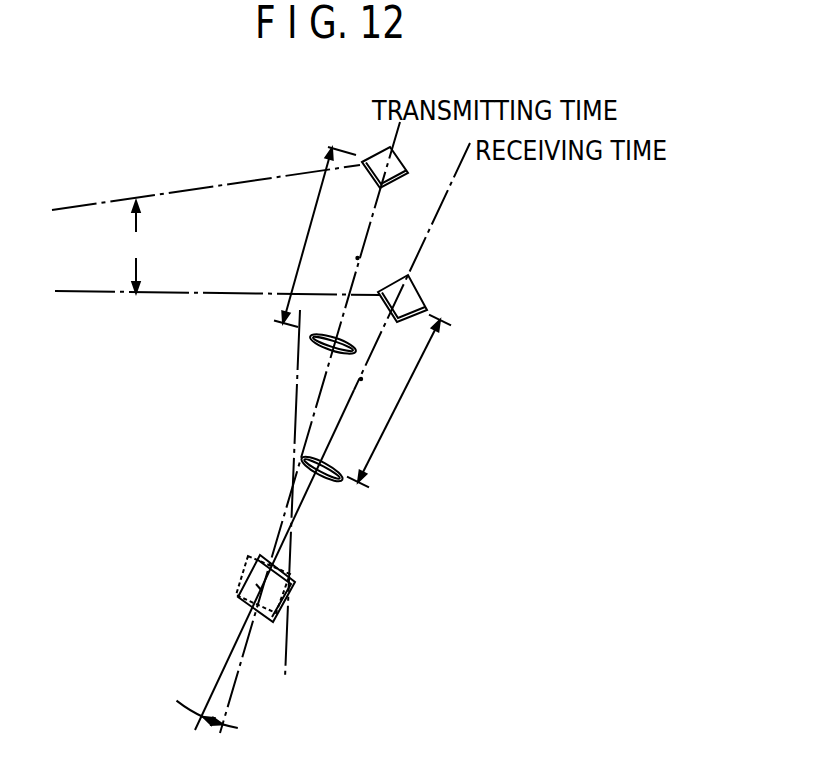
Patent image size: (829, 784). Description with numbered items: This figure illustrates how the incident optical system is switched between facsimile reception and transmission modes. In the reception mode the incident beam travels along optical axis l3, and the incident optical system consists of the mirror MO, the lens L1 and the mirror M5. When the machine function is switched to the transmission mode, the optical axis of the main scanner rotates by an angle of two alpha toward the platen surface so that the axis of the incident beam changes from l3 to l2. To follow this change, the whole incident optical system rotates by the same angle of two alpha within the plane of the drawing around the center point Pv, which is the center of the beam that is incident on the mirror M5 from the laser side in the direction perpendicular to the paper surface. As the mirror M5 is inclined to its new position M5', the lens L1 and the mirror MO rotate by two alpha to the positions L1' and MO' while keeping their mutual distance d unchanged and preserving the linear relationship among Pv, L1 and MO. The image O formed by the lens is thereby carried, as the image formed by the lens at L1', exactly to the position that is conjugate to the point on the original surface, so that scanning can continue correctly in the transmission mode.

The mirror at transmission-mode position MO' is at (395, 185).
The mirror MO is at (435, 298).
The image point O is at (360, 257).
The mutual distance d is at (362, 317).
The lens at transmission-mode position L1' is at (304, 354).
The lens L1 is at (322, 490).
The optical axis of incident beam in transmission mode l2 is at (305, 437).
The optical axis of incident beam in reception mode l3 is at (349, 424).
The mirror M5 is at (289, 597).
The mirror at inclined position M5' is at (293, 573).
The center point of beam incident on M5 Pv is at (256, 584).